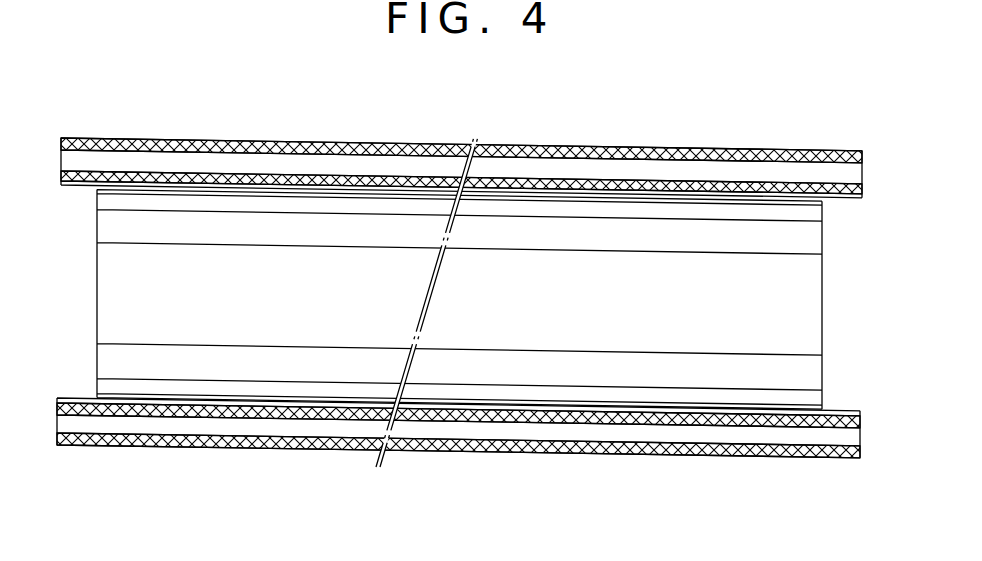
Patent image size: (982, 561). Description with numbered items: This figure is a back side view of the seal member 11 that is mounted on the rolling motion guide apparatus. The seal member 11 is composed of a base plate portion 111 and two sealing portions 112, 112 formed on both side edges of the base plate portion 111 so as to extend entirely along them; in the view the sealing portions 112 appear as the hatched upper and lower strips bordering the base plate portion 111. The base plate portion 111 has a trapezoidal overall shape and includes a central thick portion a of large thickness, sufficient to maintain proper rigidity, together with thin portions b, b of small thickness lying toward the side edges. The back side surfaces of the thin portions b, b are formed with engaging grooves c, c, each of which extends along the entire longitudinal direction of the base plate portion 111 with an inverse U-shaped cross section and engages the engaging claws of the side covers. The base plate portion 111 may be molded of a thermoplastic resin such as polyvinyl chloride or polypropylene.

The seal member 11 is at (284, 76).
The base plate portion 111 is at (535, 333).
The sealing portion 112 is at (607, 150).
The core layer a is at (800, 308).
The thin portion b is at (97, 197).
The engaging groove c is at (812, 236).